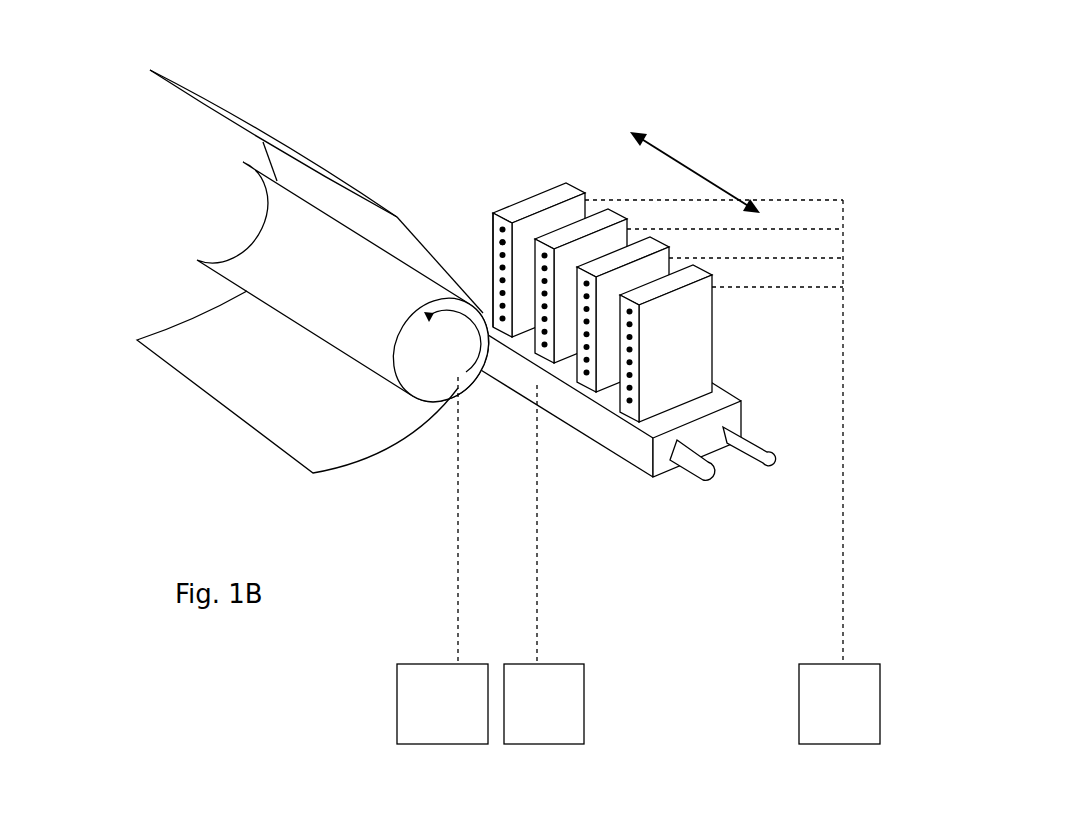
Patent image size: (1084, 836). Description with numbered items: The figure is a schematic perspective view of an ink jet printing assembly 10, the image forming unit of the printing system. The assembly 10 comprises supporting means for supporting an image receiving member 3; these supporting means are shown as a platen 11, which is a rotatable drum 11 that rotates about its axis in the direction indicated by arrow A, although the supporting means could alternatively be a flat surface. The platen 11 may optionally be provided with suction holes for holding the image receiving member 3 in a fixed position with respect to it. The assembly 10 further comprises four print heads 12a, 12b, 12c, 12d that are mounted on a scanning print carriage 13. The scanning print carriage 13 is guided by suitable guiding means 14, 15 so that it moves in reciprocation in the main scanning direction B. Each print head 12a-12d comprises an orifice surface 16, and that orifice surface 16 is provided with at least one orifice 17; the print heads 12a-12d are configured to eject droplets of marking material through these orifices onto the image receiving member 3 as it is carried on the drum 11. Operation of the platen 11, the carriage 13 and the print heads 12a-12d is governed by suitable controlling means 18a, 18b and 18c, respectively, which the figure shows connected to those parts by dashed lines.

The ink jet printing assembly 10 is at (435, 136).
The platen 11 is at (208, 197).
The image receiving member 3 is at (369, 444).
The print head 12a is at (563, 190).
The print head 12b is at (603, 220).
The print head 12c is at (648, 247).
The print head 12d is at (703, 368).
The scanning print carriage 13 is at (607, 435).
The guiding means 14 is at (700, 467).
The guiding means 15 is at (759, 443).
The orifice surface 16 is at (493, 221).
The orifice 17 is at (498, 241).
The controlling means 18a is at (410, 715).
The controlling means 18b is at (577, 710).
The controlling means 18c is at (810, 715).
The arrow indicating rotation direction A is at (459, 319).
The main scanning direction B is at (707, 172).